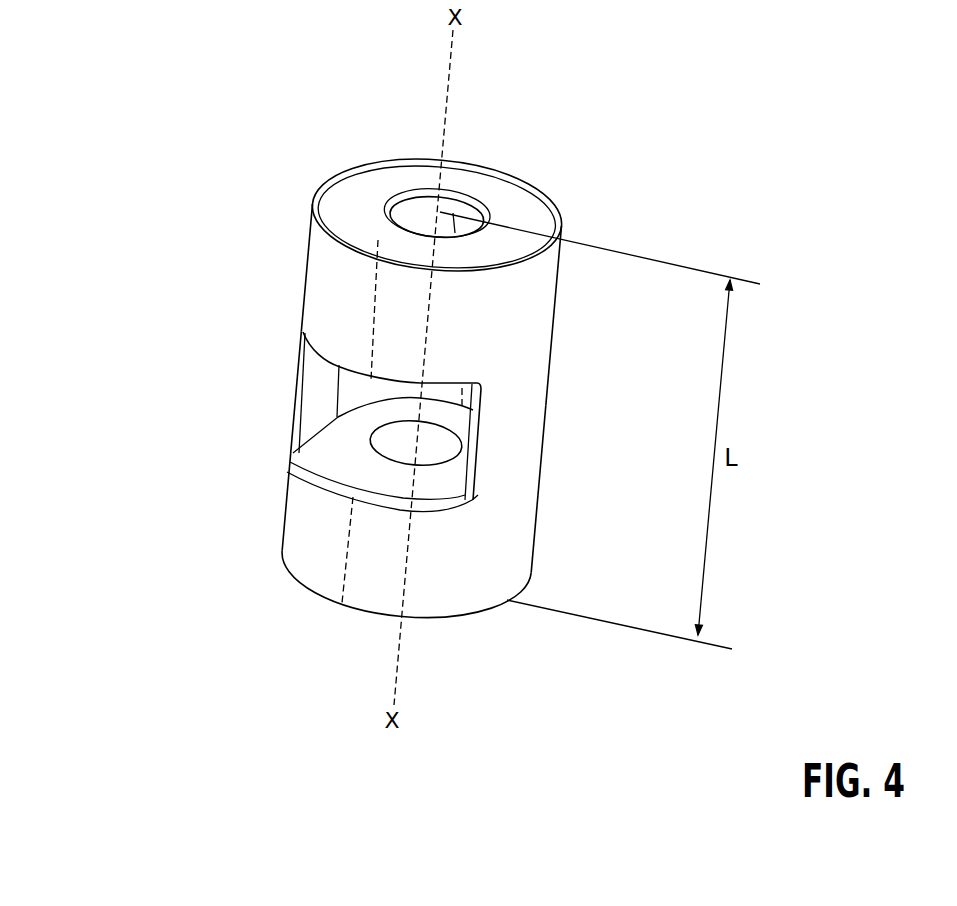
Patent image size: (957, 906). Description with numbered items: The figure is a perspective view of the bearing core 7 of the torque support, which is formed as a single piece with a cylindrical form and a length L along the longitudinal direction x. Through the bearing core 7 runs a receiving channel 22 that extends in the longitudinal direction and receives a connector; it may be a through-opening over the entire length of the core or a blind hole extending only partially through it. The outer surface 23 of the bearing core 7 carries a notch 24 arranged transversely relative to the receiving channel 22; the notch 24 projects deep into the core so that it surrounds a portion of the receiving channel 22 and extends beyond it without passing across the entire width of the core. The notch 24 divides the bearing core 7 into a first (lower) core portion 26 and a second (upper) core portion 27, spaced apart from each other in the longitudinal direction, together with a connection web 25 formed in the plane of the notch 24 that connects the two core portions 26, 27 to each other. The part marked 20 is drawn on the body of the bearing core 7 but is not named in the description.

The coupling element 7 is at (650, 178).
The cylindrical body 20 is at (506, 198).
The axial bore 22 is at (419, 205).
The upper portion of body 23 is at (296, 265).
The slot / lateral opening 24 is at (267, 396).
The lower outer surface portion 25 is at (510, 448).
The lower portion of body 26 is at (312, 524).
The outer cylindrical surface 27 is at (519, 313).